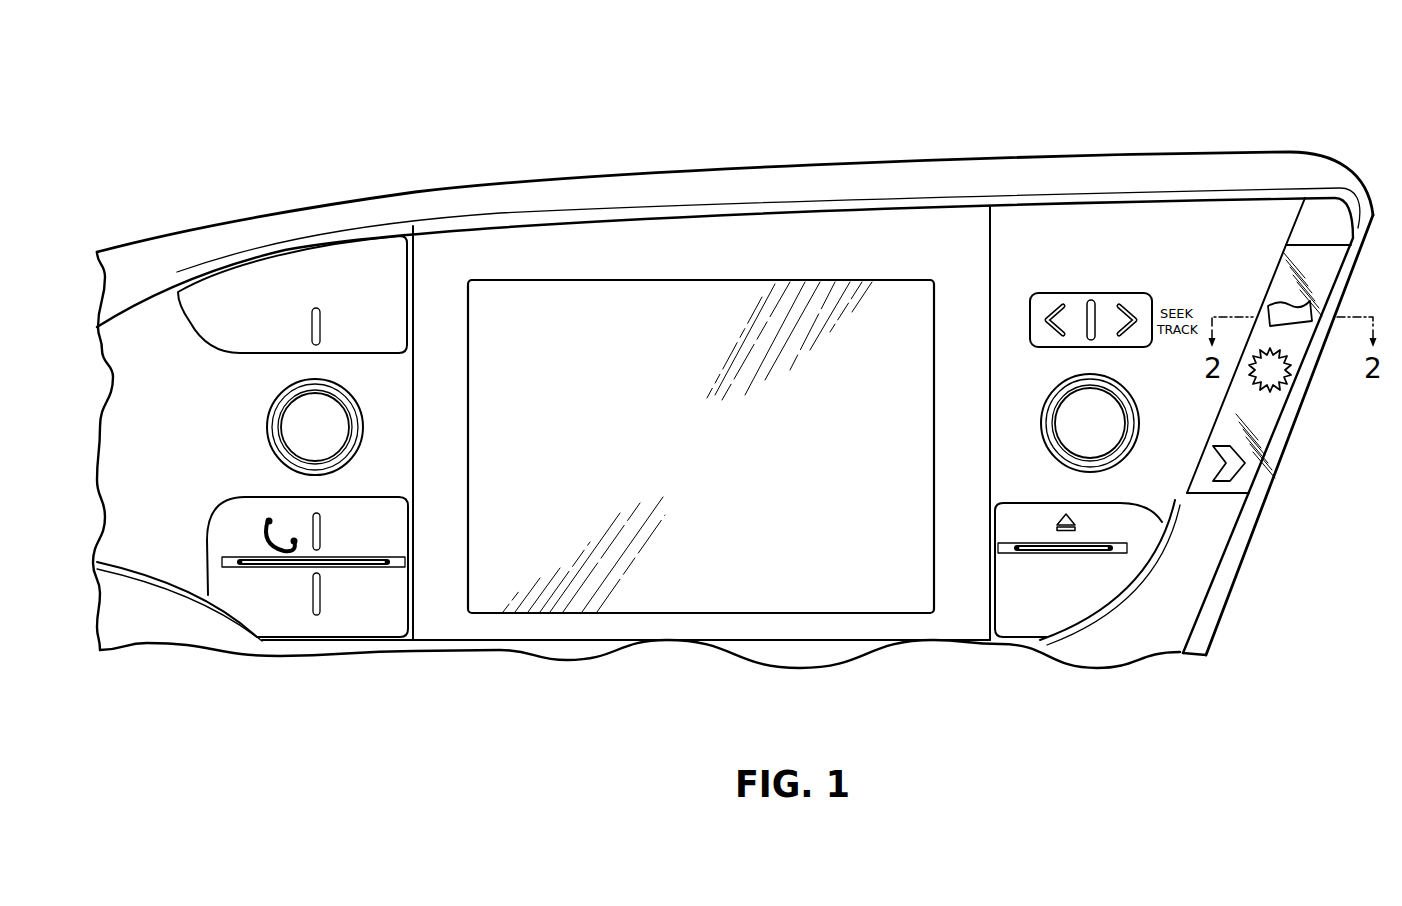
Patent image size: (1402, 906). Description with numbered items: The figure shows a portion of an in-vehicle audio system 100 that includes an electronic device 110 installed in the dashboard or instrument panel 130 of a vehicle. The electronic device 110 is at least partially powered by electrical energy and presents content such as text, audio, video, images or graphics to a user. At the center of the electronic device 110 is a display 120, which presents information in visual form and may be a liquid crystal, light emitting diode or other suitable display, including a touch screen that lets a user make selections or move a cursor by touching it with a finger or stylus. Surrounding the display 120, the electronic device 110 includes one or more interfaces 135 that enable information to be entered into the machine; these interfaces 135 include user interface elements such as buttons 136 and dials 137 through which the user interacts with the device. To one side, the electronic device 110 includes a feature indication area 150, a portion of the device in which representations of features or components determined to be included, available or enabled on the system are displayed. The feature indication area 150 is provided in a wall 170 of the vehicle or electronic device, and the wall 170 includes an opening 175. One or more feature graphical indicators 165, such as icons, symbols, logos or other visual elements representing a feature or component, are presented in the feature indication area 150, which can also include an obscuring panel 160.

The system 100 is at (222, 113).
The electronic device 110 is at (435, 171).
The display 120 is at (712, 313).
The dashboard or instrument panel 130 is at (912, 151).
The interface 135 is at (348, 660).
The buttons 136 is at (235, 530).
The dials 137 is at (310, 432).
The feature indication area 150 is at (1325, 190).
The obscuring panel 160 is at (1320, 262).
The feature graphical indicators 165 is at (1240, 470).
The wall 170 is at (1310, 220).
The opening 175 is at (1302, 243).